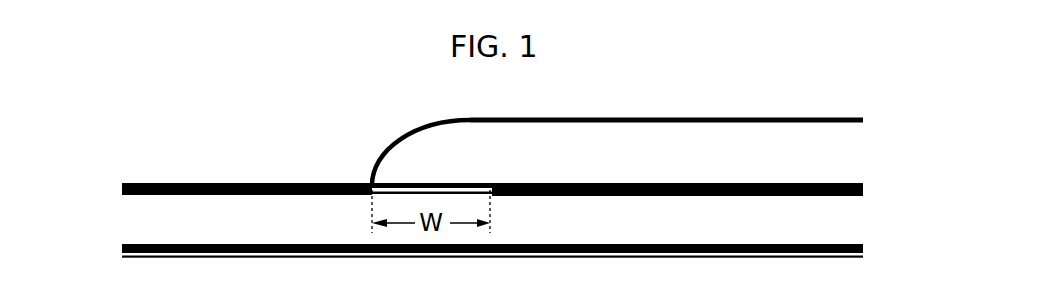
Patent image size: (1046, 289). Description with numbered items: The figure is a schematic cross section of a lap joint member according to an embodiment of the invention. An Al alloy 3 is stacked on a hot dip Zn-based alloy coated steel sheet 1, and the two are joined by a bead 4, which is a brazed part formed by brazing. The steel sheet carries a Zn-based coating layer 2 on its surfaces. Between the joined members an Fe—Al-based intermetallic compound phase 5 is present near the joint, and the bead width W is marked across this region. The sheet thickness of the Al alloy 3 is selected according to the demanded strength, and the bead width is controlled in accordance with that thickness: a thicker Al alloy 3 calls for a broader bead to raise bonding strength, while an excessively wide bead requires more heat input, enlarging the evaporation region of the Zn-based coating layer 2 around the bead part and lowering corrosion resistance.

The hot dip Zn-based alloy coated steel sheet 1 is at (837, 222).
The Zn-based coating layer 2 is at (122, 184).
The Al alloy 3 is at (850, 137).
The bead 4 is at (433, 152).
The Fe—Al-based intermetallic compound phase 5 is at (445, 192).